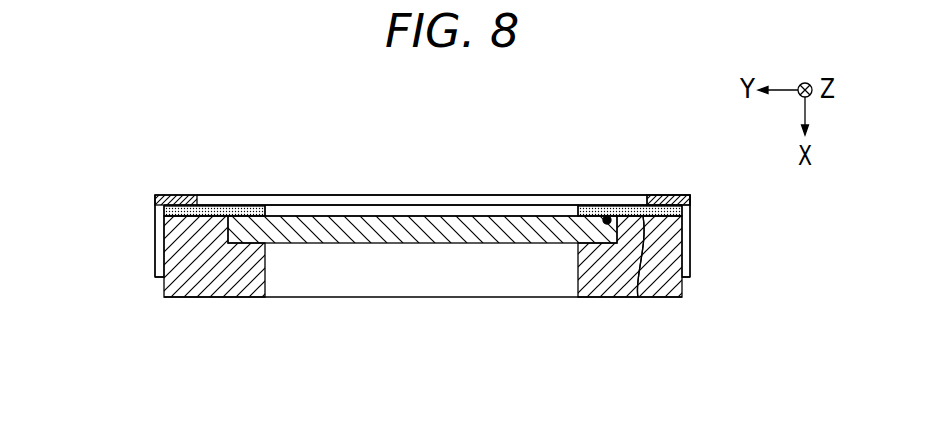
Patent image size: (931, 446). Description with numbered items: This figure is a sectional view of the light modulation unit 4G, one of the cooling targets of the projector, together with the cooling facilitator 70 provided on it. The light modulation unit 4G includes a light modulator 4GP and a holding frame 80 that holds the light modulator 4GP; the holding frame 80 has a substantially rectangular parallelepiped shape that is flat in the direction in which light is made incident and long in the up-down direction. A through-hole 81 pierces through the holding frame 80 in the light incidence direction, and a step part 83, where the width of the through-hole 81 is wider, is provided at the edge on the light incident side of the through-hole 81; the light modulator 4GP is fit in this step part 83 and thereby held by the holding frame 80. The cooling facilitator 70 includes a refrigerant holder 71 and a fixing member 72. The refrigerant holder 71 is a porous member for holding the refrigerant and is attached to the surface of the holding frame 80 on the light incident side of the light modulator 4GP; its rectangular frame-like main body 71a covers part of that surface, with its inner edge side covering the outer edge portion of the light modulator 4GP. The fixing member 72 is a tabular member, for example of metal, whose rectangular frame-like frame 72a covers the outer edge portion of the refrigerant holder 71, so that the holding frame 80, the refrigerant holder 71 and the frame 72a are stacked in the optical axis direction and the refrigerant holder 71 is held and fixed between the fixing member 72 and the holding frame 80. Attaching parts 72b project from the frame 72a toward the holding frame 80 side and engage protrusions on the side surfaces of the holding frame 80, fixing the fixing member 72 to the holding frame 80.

The cooling facilitator 70 is at (429, 171).
The refrigerant holder 71 is at (216, 191).
The main body 71a is at (638, 297).
The fixing member 72 is at (175, 190).
The frame 72a is at (675, 195).
The attaching parts 72b is at (155, 249).
The step part 83 is at (606, 218).
The light modulation unit 4G is at (390, 324).
The holding frame 80 is at (240, 290).
The light modulator 4GP is at (335, 243).
The through-hole 81 is at (580, 268).